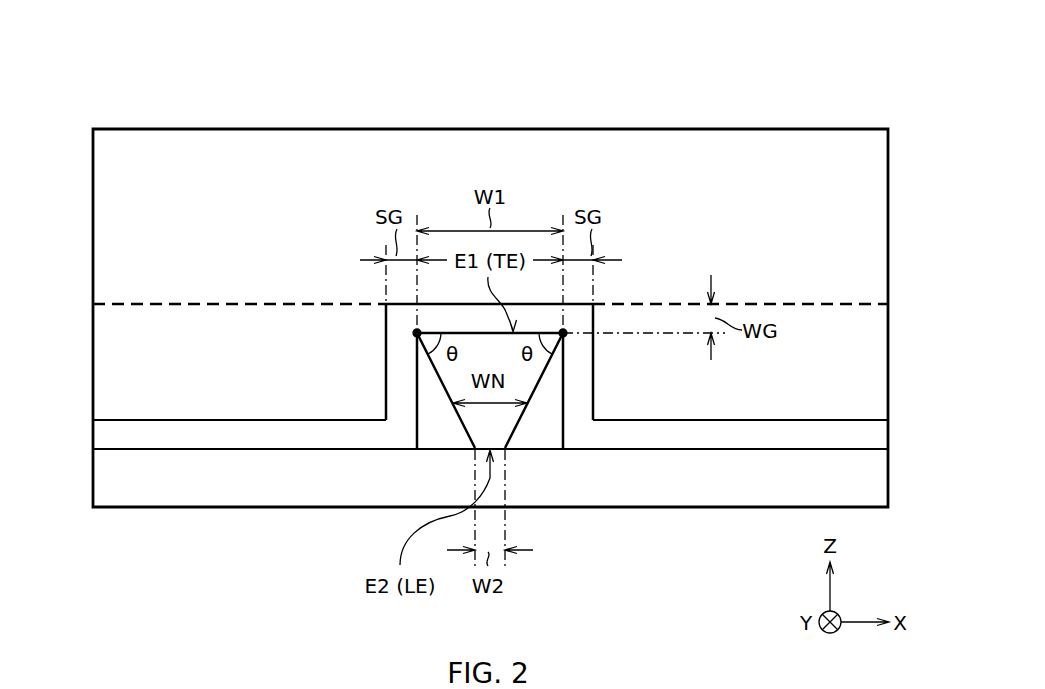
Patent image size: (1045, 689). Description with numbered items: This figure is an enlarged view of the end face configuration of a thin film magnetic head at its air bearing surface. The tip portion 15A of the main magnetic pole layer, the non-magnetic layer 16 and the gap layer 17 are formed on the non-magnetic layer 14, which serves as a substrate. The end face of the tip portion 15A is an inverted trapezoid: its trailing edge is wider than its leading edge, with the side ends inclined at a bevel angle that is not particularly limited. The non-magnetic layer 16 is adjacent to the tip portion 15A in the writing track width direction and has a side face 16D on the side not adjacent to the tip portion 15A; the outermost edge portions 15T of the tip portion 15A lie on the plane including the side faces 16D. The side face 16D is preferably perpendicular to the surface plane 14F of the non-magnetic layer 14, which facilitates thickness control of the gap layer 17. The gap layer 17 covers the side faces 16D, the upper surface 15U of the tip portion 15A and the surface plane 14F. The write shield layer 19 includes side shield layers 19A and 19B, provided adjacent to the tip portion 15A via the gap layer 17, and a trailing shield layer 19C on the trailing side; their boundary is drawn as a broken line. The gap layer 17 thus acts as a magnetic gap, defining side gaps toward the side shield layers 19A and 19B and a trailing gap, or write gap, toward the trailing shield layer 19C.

The non-magnetic layer 14 is at (192, 490).
The surface plane of the non-magnetic layer 14F is at (792, 436).
The tip portion of the main magnetic pole layer 15A is at (507, 428).
The outermost edge portions of the tip portion 15T is at (417, 333).
The upper surface of the tip portion 15U is at (450, 320).
The non-magnetic layer 16 is at (443, 435).
The side face of the non-magnetic layer 16D is at (404, 412).
The gap layer 17 is at (729, 437).
The write shield layer 19 is at (387, 42).
The side shield layer 19A is at (178, 320).
The side shield layer 19B is at (812, 320).
The trailing shield layer 19C is at (490, 152).